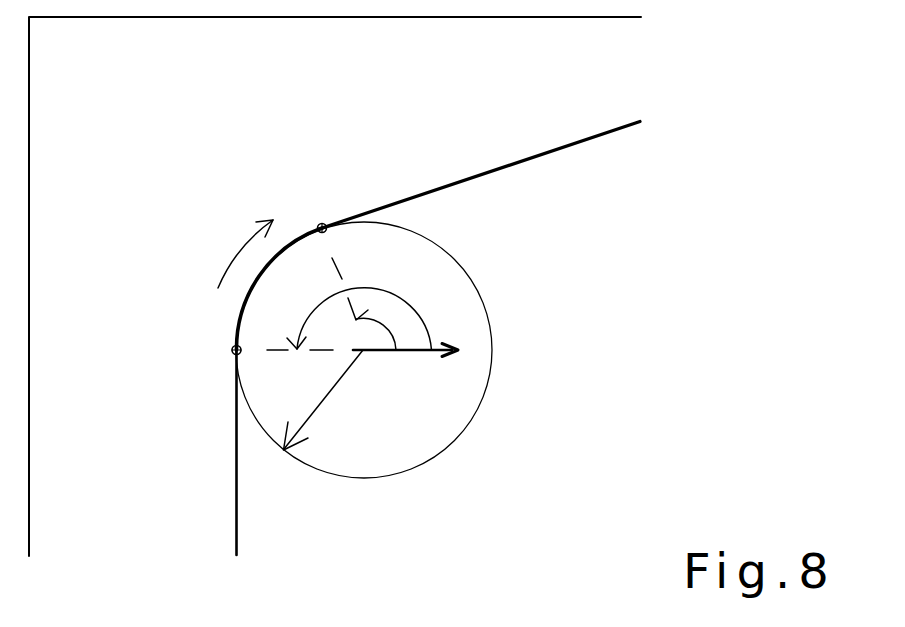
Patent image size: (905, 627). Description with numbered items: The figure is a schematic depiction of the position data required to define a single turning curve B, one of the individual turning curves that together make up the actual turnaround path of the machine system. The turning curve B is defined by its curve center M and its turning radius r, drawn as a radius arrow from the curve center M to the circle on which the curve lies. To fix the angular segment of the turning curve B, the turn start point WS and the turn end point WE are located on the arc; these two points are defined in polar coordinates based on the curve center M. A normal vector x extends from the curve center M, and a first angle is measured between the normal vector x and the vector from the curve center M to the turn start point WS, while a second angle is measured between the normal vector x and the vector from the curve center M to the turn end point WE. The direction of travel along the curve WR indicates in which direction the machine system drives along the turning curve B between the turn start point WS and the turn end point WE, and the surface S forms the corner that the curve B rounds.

The surface of workpiece S is at (116, 97).
The turning curve B is at (293, 236).
The direction of travel along curve WR is at (237, 252).
The turn start point WS is at (231, 350).
The turn end point WE is at (322, 224).
The turning radius r is at (322, 407).
The curve center M is at (361, 351).
The normal vector x is at (407, 360).